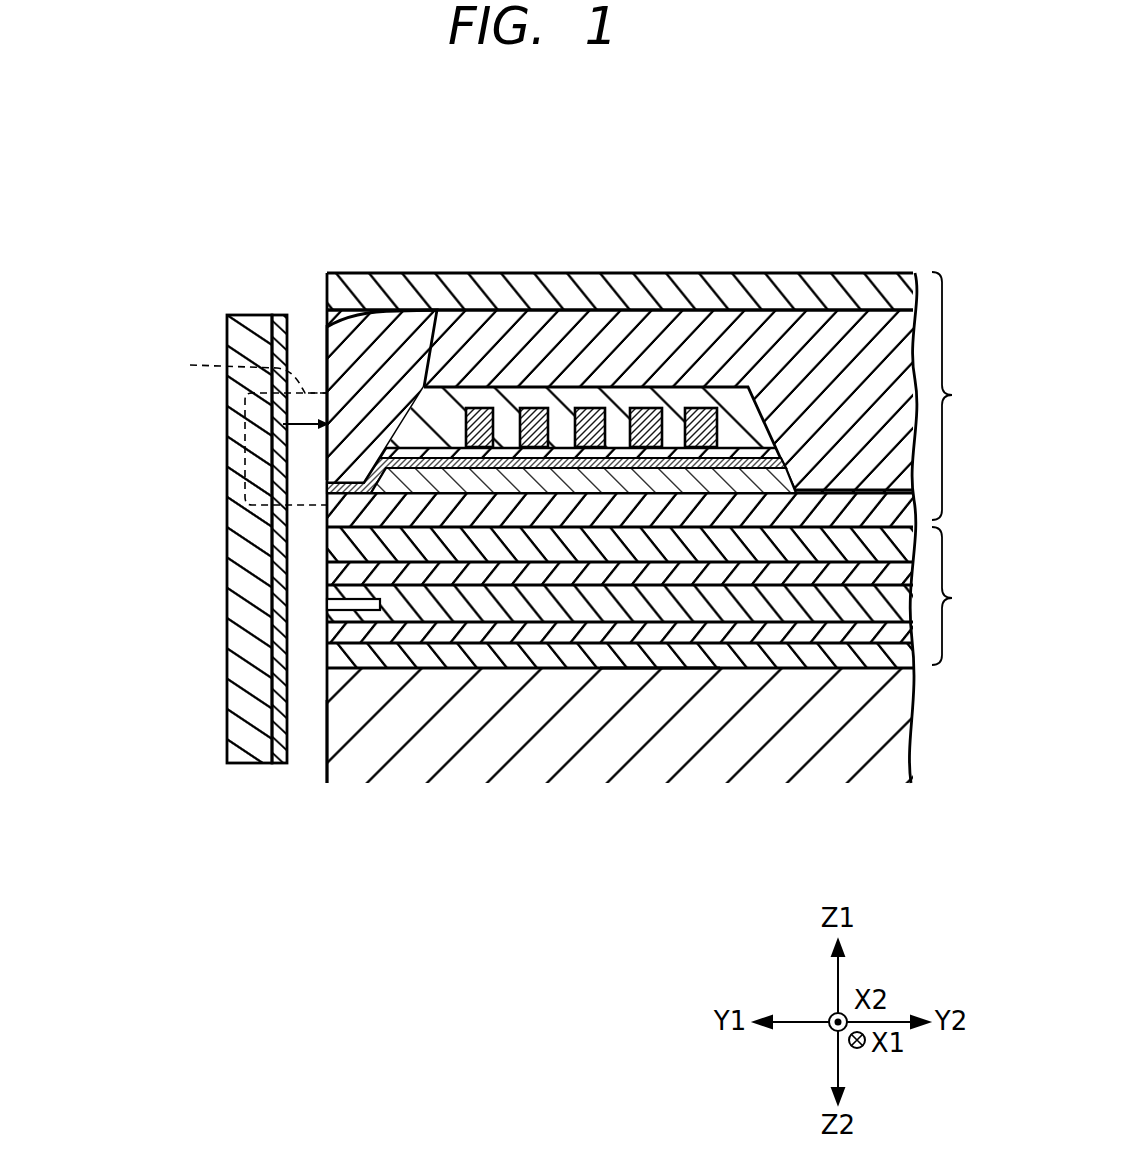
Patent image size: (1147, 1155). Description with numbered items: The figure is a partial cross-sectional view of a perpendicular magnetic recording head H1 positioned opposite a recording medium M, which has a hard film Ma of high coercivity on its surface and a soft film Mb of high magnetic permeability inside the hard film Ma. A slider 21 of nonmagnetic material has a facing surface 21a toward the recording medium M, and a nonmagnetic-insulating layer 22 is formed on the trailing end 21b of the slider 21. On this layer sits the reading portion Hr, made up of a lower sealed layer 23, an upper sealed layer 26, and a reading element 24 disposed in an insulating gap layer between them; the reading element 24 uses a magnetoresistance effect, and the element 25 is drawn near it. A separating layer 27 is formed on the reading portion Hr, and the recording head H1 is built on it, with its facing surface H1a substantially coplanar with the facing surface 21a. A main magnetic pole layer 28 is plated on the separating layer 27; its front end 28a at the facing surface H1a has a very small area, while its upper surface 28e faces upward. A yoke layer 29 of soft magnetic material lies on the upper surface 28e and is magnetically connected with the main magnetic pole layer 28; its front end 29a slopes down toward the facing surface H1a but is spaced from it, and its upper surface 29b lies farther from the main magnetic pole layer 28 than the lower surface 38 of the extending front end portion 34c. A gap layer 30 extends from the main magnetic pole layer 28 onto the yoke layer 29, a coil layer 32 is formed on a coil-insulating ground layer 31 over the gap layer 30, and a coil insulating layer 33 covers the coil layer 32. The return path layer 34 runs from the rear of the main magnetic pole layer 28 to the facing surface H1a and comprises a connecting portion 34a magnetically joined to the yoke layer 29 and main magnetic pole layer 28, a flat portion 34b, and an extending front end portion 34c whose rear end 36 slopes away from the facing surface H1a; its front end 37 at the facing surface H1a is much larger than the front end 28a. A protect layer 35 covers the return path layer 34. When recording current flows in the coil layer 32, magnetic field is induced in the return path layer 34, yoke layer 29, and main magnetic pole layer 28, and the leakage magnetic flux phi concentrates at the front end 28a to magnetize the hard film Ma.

The slider 21 is at (527, 753).
The facing surface 21a is at (326, 752).
The trailing end 21b is at (660, 664).
The nonmagnetic-insulating layer 22 is at (330, 664).
The lower sealed layer 23 is at (335, 657).
The reading element 24 is at (338, 633).
The magnetoresistive element 25 is at (405, 606).
The upper sealed layer 26 is at (332, 604).
The separating layer 27 is at (345, 576).
The main magnetic pole layer 28 is at (845, 510).
The front end of the main magnetic pole layer 28a is at (400, 507).
The upper surface of the main magnetic pole layer 28e is at (553, 500).
The yoke layer 29 is at (748, 485).
The front end of the yoke layer 29a is at (350, 548).
The upper surface of the yoke layer 29b is at (465, 480).
The gap layer 30 is at (345, 488).
The coil-insulating ground layer 31 is at (512, 447).
The coil layer 32 is at (592, 398).
The coil insulating layer 33 is at (737, 390).
The return path layer 34 is at (690, 347).
The connecting portion 34a is at (873, 403).
The flat portion 34b is at (630, 327).
The extending front end portion 34c is at (357, 433).
The protect layer 35 is at (837, 307).
The rear end of the extending front end portion 36 is at (435, 433).
The front end of the return path layer 37 is at (327, 352).
The lower surface of the extending front end portion 38 is at (340, 470).
The recording medium M is at (206, 567).
The hard film Ma is at (273, 743).
The soft film Mb is at (242, 722).
The perpendicular magnetic recording head H1 is at (962, 396).
The reading portion Hr is at (959, 596).
The facing surface of the perpendicular magnetic recording head H1a is at (283, 424).
The magnetic flux phi is at (246, 425).